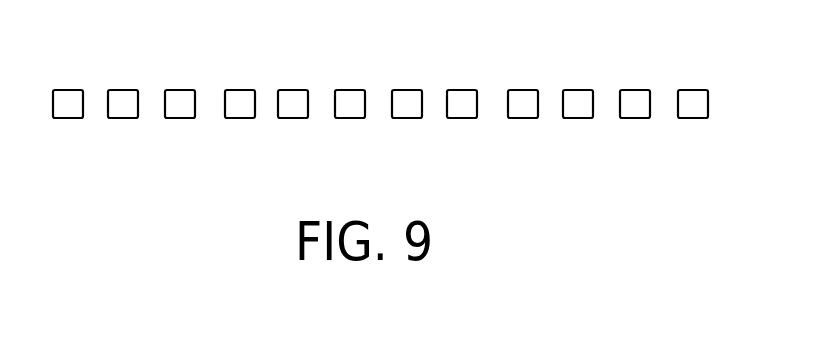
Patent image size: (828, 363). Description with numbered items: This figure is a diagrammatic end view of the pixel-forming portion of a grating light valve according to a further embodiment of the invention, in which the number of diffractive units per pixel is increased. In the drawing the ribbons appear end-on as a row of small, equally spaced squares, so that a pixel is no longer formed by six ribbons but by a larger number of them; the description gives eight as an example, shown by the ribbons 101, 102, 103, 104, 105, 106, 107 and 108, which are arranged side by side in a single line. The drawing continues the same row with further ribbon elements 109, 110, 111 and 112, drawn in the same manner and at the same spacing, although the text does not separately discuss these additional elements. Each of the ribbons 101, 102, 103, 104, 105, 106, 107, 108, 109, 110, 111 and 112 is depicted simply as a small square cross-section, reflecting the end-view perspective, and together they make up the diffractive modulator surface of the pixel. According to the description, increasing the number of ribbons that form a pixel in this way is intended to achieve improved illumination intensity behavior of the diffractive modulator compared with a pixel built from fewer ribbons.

The ribbon 101 is at (68, 117).
The ribbon 102 is at (125, 90).
The ribbon 103 is at (180, 117).
The ribbon 104 is at (242, 90).
The ribbon 105 is at (293, 117).
The ribbon 106 is at (352, 90).
The ribbon 107 is at (407, 117).
The ribbon 108 is at (464, 90).
The pixel cell 109 is at (523, 117).
The pixel cell 110 is at (580, 90).
The pixel cell 111 is at (635, 117).
The pixel cell 112 is at (695, 90).